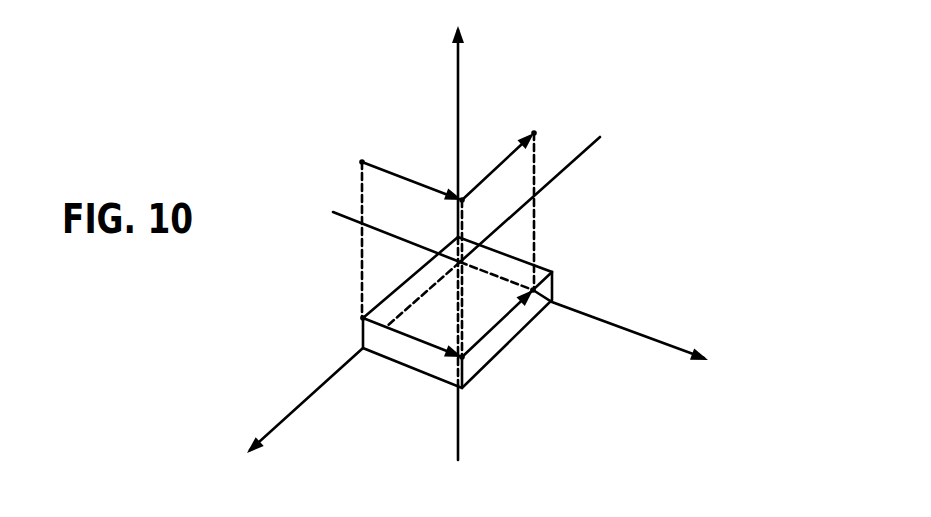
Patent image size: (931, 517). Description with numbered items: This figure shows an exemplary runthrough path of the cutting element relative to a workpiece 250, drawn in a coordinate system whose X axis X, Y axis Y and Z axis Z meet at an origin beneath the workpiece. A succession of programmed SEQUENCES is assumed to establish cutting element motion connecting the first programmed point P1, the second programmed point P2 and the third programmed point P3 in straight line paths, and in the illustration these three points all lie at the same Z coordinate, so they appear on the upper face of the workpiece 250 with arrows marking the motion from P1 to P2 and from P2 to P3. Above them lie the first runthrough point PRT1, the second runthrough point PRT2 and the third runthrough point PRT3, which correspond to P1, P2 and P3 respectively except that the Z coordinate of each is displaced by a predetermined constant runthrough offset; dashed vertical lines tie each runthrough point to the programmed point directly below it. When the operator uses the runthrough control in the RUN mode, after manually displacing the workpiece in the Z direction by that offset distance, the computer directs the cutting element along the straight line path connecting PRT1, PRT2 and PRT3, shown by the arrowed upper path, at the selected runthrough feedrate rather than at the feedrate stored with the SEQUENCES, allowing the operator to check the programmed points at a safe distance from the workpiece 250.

The workpiece 250 is at (530, 323).
The first programmed point P1 is at (363, 318).
The second programmed point P2 is at (462, 358).
The third programmed point P3 is at (533, 290).
The first runthrough point PRT1 is at (362, 162).
The second runthrough point PRT2 is at (462, 200).
The third runthrough point PRT3 is at (534, 133).
The X axis X is at (413, 306).
The Y axis Y is at (531, 293).
The Z axis Z is at (467, 239).